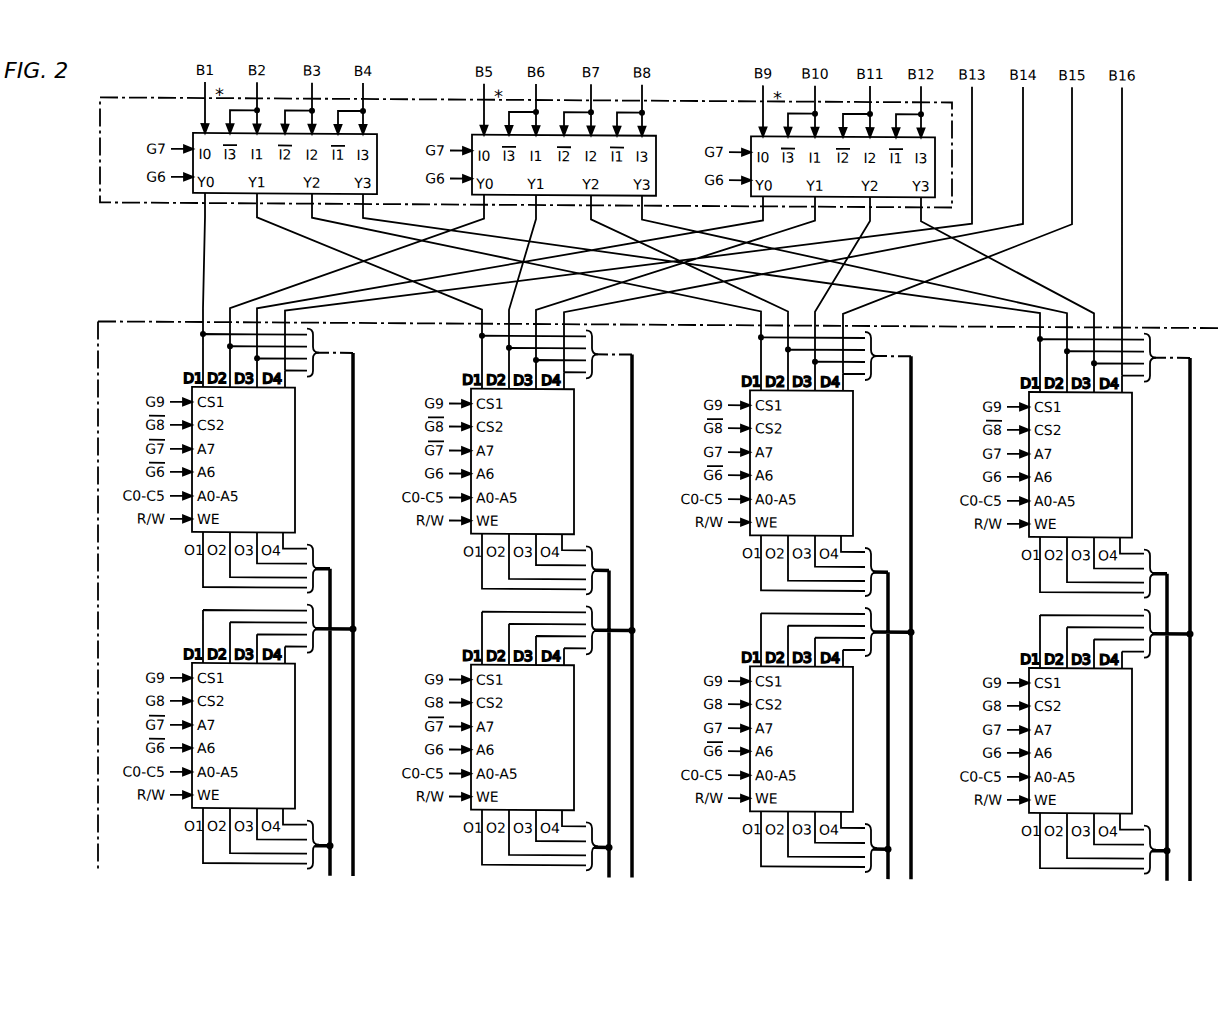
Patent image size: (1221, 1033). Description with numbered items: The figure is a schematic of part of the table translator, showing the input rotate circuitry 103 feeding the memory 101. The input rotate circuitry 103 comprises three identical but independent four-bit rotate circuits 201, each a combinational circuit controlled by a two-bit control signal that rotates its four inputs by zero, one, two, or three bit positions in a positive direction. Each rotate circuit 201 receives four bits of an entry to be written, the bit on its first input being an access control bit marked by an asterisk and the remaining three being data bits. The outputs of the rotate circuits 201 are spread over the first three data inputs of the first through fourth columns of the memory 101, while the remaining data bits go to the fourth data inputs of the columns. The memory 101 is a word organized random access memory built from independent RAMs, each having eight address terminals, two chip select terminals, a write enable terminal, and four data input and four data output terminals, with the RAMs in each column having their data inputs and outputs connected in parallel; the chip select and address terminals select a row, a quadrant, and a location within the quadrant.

The memory 101 is at (98, 352).
The input rotate circuitry 103 is at (100, 148).
The 4-bit rotate circuit 201 is at (193, 133).